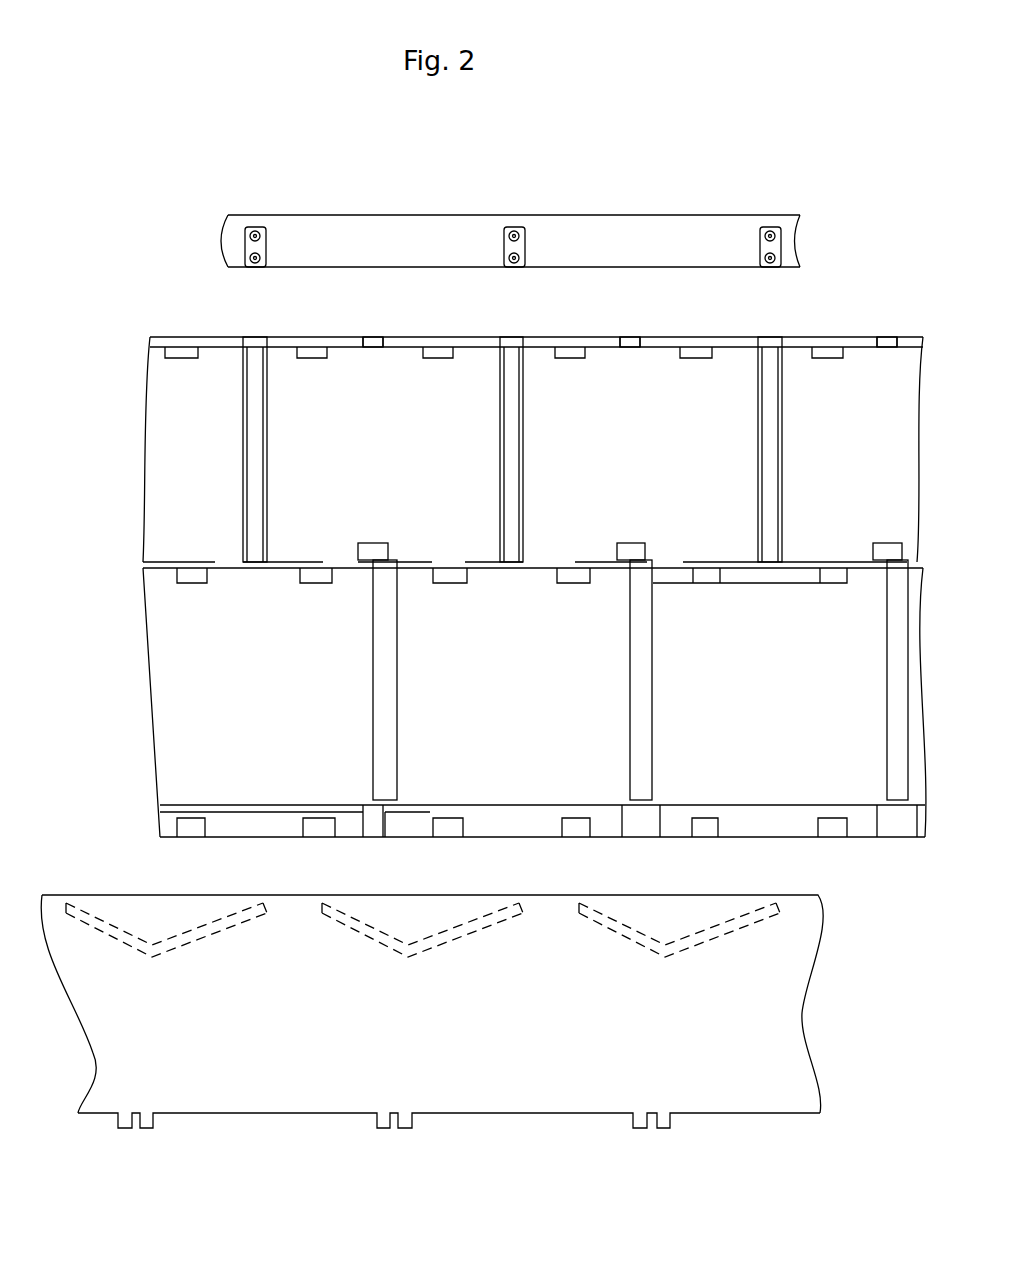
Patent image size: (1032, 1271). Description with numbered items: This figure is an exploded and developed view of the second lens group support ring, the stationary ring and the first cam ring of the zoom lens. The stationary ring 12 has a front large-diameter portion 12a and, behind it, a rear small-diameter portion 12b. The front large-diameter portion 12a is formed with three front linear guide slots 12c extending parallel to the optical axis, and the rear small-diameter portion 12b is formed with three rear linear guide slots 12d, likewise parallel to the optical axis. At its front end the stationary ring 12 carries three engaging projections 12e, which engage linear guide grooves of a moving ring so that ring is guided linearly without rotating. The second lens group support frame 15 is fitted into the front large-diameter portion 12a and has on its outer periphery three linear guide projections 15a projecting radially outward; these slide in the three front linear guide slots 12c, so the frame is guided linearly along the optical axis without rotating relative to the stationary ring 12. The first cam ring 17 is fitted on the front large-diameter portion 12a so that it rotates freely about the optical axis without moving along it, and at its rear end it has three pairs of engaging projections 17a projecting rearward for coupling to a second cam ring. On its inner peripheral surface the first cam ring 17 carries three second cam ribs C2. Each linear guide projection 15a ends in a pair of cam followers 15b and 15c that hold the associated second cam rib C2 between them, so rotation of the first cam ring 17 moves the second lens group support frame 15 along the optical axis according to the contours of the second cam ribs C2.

The stationary ring 12 is at (95, 440).
The front large-diameter portion 12a is at (162, 482).
The rear small-diameter portion 12b is at (162, 643).
The front linear guide slot 12c is at (267, 418).
The rear linear guide slot 12d is at (635, 703).
The engaging projection 12e is at (371, 346).
The second lens group support frame 15 is at (596, 228).
The linear guide projection 15a is at (527, 250).
The cam follower 15b is at (513, 231).
The cam follower 15c is at (512, 264).
The first cam ring 17 is at (773, 1017).
The engaging projection 17a is at (133, 1130).
The second cam rib C2 is at (184, 944).